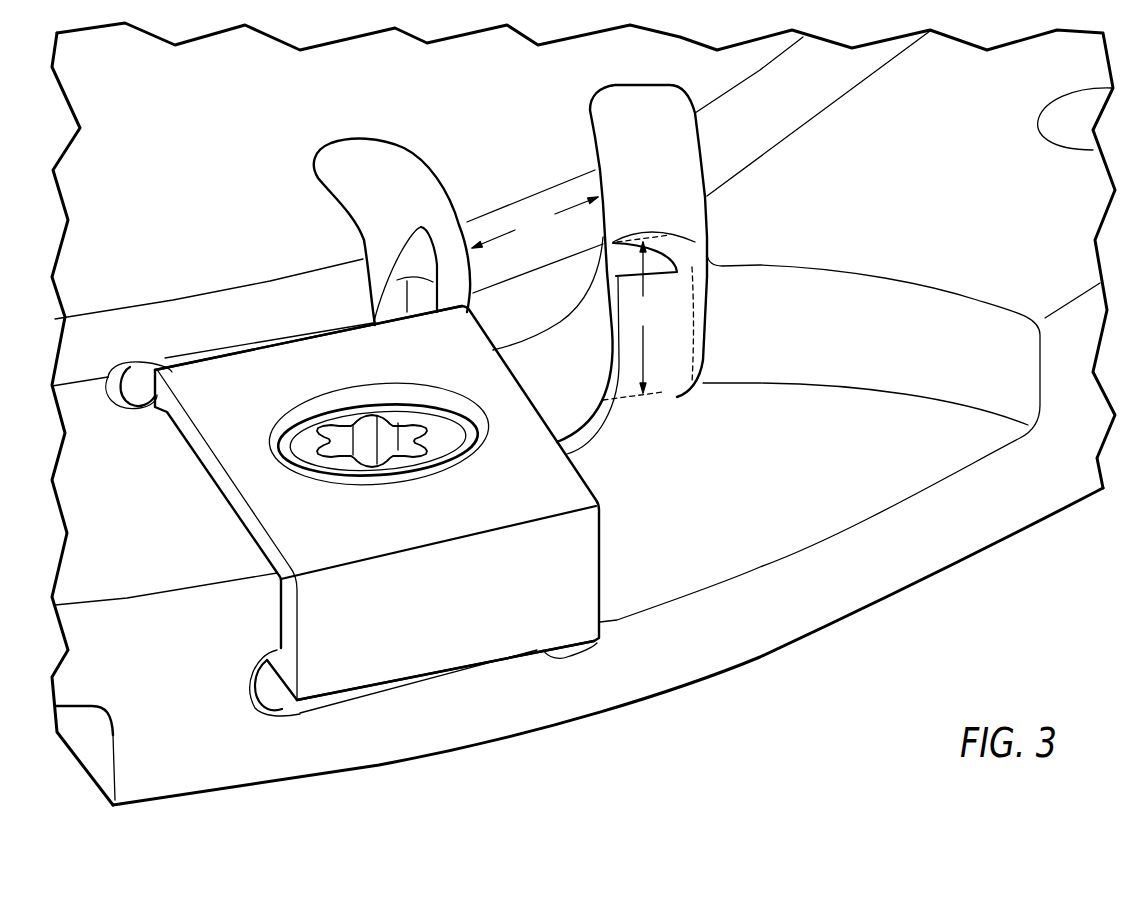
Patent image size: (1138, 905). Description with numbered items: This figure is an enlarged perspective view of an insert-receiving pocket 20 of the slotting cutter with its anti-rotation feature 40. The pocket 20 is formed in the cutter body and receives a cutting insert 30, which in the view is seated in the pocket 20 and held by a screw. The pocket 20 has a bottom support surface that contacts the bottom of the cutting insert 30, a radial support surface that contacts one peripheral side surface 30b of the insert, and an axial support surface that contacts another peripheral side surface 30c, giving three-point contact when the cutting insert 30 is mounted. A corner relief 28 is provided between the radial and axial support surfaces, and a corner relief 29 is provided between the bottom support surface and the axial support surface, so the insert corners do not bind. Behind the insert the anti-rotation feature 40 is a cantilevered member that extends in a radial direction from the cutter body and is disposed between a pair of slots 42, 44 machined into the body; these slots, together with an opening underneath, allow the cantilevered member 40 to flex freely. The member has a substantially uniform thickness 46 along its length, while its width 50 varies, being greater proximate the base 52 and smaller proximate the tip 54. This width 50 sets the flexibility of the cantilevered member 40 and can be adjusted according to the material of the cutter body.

The insert-receiving pocket 20 is at (515, 683).
The corner relief 28 is at (138, 387).
The corner relief 29 is at (273, 693).
The cutting insert 30 is at (413, 652).
The peripheral side surface 30b is at (313, 337).
The peripheral side surface 30c is at (603, 573).
The anti-rotation feature 40 is at (613, 185).
The slot 42 is at (357, 173).
The slot 44 is at (648, 119).
The thickness 46 is at (633, 321).
The width 50 is at (535, 222).
The base 52 is at (486, 119).
The tip 54 is at (565, 330).